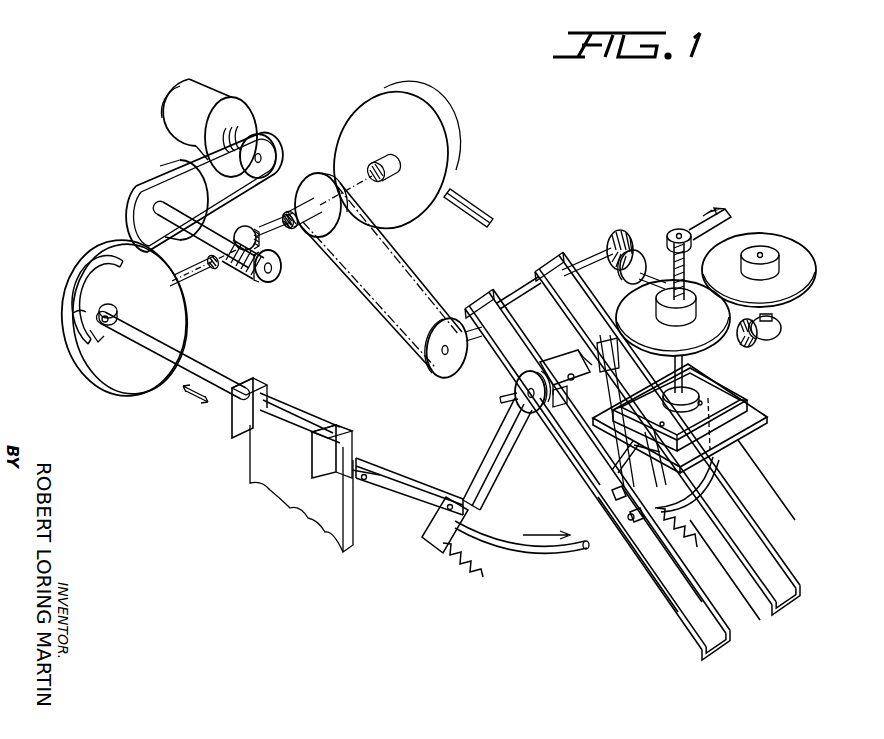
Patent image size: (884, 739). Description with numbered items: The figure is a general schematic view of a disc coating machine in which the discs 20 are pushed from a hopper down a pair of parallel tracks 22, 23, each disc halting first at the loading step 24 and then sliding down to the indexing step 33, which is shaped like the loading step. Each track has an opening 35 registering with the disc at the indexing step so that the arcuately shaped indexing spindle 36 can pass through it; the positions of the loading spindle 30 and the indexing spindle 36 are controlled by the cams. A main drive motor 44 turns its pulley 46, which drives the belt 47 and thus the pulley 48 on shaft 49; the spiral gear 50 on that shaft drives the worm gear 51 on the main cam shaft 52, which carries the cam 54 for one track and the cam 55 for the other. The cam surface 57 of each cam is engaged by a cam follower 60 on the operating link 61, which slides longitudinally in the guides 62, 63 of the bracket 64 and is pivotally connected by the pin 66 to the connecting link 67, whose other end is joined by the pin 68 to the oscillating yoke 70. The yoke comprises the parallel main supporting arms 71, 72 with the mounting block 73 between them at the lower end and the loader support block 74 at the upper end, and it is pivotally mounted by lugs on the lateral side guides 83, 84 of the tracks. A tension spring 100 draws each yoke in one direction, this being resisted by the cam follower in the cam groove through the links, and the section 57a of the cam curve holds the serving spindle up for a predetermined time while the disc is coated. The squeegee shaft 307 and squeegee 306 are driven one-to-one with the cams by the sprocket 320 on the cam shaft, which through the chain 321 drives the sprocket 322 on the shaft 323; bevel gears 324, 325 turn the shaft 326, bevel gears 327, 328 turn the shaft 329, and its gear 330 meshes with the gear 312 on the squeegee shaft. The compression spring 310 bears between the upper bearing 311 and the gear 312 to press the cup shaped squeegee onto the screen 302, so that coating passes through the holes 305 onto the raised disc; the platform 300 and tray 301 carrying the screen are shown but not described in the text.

The disc 20 is at (620, 508).
The track 22 is at (483, 297).
The track 23 is at (552, 258).
The loading step 24 is at (573, 433).
The loading spindle 30 is at (560, 397).
The indexing step 33 is at (658, 555).
The opening 35 is at (640, 528).
The indexing spindle 36 is at (714, 458).
The main drive motor 44 is at (216, 87).
The pulley 46 is at (274, 152).
The belt 47 is at (170, 167).
The pulley 48 is at (190, 190).
The shaft 49 is at (208, 237).
The spiral gear 50 is at (252, 286).
The worm gear 51 is at (255, 225).
The main cam shaft 52 is at (188, 283).
The cam 54 is at (127, 383).
The cam 55 is at (447, 157).
The cam surface 57 is at (98, 341).
The section of the cam curve 57a is at (73, 313).
The cam follower 60 is at (115, 307).
The operating link 61 is at (210, 367).
The guide 62 is at (253, 377).
The guide 63 is at (340, 430).
The bracket 64 is at (296, 480).
The pin 66 is at (367, 481).
The connecting link 67 is at (420, 480).
The pin 68 is at (447, 508).
The yoke 70 is at (482, 436).
The main supporting arm 71 is at (495, 470).
The main supporting arm 72 is at (517, 458).
The mounting block 73 is at (461, 564).
The loader support block 74 is at (557, 363).
The lateral side guide 83 is at (690, 628).
The lateral side guide 84 is at (707, 611).
The tension spring 100 is at (498, 395).
The platform 300 is at (762, 418).
The tray 301 is at (750, 402).
The screen 302 is at (668, 416).
The hole 305 is at (702, 403).
The squeegee 306 is at (702, 388).
The squeegee shaft 307 is at (690, 369).
The compression spring 310 is at (687, 251).
The upper bearing 311 is at (720, 207).
The gear 312 is at (708, 350).
The sprocket 320 is at (308, 181).
The chain 321 is at (364, 290).
The sprocket 322 is at (433, 362).
The shaft 323 is at (522, 301).
The bevel gear 324 is at (615, 231).
The bevel gear 325 is at (628, 281).
The shaft 326 is at (649, 268).
The bevel gear 327 is at (757, 343).
The bevel gear 328 is at (768, 328).
The shaft 329 is at (772, 318).
The gear 330 is at (807, 260).